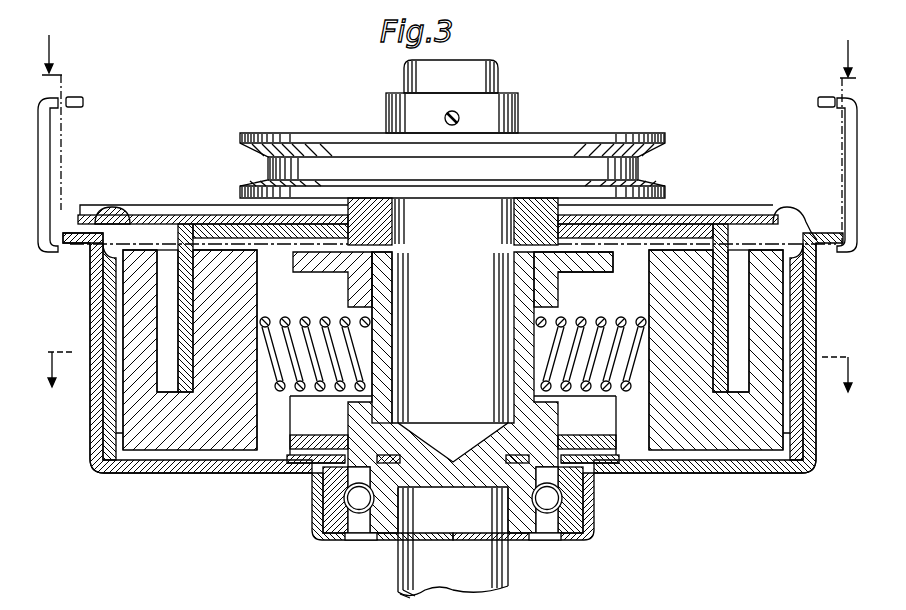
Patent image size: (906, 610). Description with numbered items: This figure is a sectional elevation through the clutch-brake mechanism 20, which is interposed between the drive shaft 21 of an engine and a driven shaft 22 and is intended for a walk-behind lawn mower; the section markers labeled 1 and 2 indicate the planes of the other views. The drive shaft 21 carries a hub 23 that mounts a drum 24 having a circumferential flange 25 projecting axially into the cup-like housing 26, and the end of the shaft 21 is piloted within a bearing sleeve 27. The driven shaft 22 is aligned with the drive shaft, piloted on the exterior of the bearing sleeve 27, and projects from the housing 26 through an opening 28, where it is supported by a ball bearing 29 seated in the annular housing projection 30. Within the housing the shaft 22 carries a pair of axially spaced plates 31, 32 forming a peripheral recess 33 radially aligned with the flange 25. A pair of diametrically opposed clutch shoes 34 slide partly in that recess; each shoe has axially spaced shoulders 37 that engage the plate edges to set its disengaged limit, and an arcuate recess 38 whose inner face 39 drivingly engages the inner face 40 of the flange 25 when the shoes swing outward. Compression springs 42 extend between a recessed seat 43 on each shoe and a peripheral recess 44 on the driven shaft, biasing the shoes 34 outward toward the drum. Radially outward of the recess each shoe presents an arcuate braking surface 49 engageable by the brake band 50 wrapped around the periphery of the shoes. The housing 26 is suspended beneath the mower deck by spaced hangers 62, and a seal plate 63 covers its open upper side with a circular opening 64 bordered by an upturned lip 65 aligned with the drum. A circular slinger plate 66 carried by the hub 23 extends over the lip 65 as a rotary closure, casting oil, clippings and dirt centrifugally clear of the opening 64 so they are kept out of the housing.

The section line 1- 1 is at (449, 140).
The section line 2- 2 is at (450, 382).
The clutch-brake mechanism 20 is at (140, 496).
The drive shaft 21 is at (496, 73).
The driven shaft 22 is at (388, 583).
The hub 23 is at (506, 116).
The drum 24 is at (678, 228).
The circumferential flange 25 is at (180, 298).
The housing 26 is at (228, 474).
The bearing sleeve 27 is at (511, 377).
The opening 28 is at (548, 543).
The ball bearing 29 is at (562, 506).
The annular housing projection 30 is at (585, 534).
The plate 31 is at (578, 273).
The plate 32 is at (316, 458).
The peripheral recess 33 is at (327, 468).
The clutch shoe 34 is at (199, 445).
The shoulder 37 is at (268, 318).
The arcuate recess 38 is at (122, 379).
The inner face 39 is at (190, 336).
The inner face 40 is at (197, 362).
The compression spring 42 is at (307, 318).
The recessed seat 43 is at (294, 284).
The peripheral recess 44 is at (367, 334).
The arcuate braking surface 49 is at (121, 292).
The brake band 50 is at (110, 272).
The hanger 62 is at (46, 152).
The seal plate 63 is at (73, 201).
The circular opening 64 is at (152, 201).
The upturned lip 65 is at (117, 201).
The slinger plate 66 is at (226, 201).